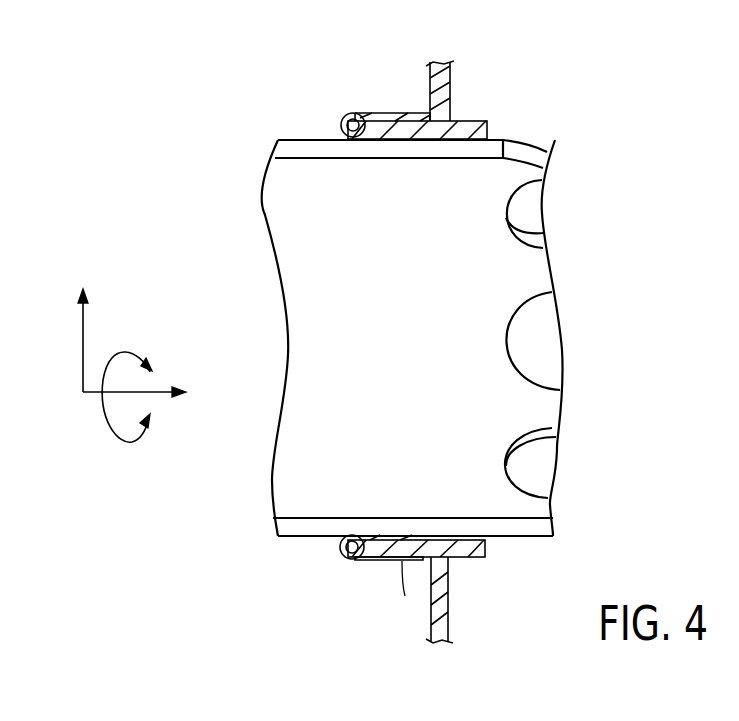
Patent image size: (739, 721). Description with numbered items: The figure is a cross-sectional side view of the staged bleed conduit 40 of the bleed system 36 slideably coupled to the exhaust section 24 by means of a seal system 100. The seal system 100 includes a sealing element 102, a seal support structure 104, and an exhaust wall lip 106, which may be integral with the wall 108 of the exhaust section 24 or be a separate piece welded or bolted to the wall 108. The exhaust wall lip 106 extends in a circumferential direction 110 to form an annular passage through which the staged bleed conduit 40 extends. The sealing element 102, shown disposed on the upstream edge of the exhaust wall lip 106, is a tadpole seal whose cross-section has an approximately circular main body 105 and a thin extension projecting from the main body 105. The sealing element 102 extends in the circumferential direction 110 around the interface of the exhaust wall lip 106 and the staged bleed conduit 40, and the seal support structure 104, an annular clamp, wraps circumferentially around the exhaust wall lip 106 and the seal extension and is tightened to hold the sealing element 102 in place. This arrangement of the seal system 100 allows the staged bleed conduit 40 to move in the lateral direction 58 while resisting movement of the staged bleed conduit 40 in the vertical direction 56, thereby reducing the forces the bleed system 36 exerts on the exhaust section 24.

The seal system 100 is at (473, 63).
The sealing element 102 is at (344, 117).
The seal support structure 104 is at (400, 593).
The main body 105 is at (341, 555).
The exhaust wall lip 106 is at (470, 119).
The wall 108 is at (447, 612).
The bleed system 36 is at (217, 158).
The staged bleed conduit 40 is at (319, 253).
The vertical direction 56 is at (82, 344).
The lateral direction 58 is at (87, 395).
The circumferential direction 110 is at (128, 343).
The exhaust section 24 is at (677, 357).